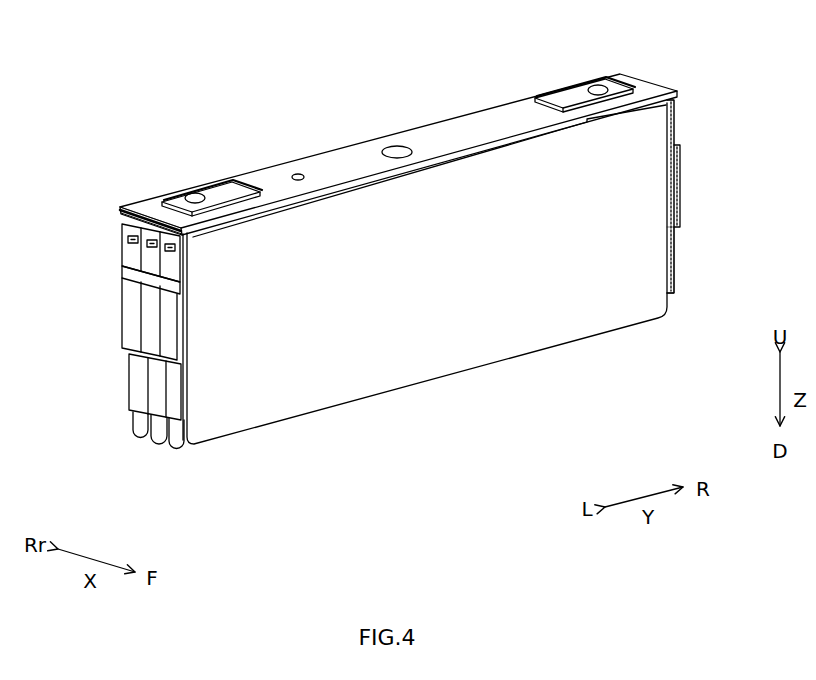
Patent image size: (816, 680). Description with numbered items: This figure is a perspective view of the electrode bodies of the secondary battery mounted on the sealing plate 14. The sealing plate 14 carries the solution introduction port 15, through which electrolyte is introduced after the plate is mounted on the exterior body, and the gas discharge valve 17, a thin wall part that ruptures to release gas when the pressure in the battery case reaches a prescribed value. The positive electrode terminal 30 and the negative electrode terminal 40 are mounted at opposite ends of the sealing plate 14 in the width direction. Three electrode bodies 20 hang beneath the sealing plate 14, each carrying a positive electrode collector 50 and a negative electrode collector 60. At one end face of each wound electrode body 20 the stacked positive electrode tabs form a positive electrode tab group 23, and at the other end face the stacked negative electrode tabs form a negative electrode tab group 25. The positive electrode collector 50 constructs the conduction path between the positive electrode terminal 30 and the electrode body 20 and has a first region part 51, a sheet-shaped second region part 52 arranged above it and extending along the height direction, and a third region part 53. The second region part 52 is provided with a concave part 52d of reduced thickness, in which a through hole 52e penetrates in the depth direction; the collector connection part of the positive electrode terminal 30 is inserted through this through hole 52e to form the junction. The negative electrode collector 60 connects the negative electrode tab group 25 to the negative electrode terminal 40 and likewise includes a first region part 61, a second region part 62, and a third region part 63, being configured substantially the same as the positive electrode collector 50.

The sealing plate 14 is at (478, 126).
The solution introduction port 15 is at (301, 172).
The gas discharge valve 17 is at (400, 146).
The electrode body 20 is at (140, 419).
The positive electrode tab group 23 is at (187, 342).
The negative electrode tab group 25 is at (662, 222).
The positive electrode terminal 30 is at (190, 188).
The negative electrode terminal 40 is at (595, 76).
The positive electrode collector 50 is at (163, 338).
The first region part 51 is at (167, 291).
The second region part 52 is at (160, 266).
The concave part 52d is at (121, 212).
The through hole 52e is at (166, 247).
The third region part 53 is at (175, 373).
The negative electrode collector 60 is at (683, 197).
The first region part 61 is at (681, 152).
The second region part 62 is at (676, 127).
The third region part 63 is at (674, 248).